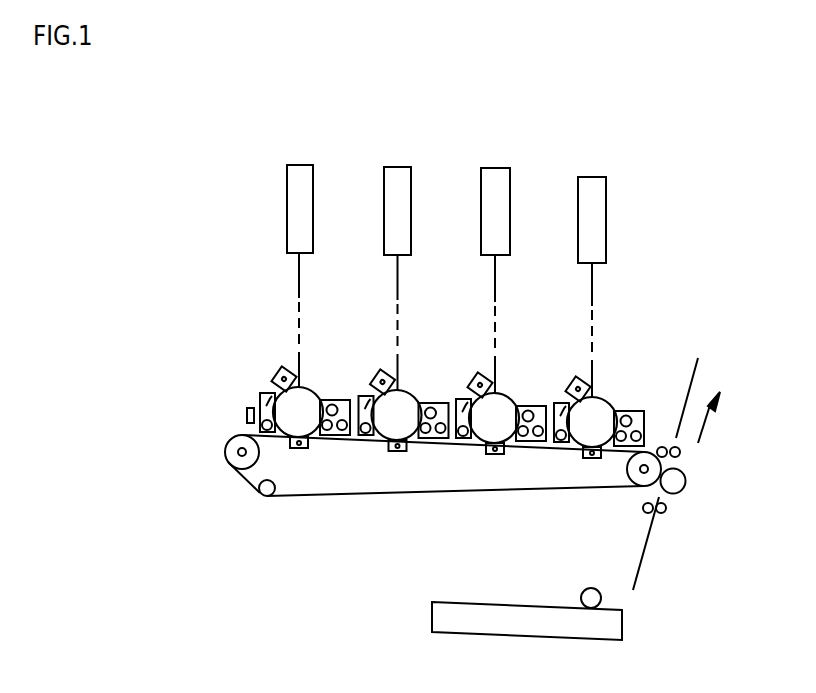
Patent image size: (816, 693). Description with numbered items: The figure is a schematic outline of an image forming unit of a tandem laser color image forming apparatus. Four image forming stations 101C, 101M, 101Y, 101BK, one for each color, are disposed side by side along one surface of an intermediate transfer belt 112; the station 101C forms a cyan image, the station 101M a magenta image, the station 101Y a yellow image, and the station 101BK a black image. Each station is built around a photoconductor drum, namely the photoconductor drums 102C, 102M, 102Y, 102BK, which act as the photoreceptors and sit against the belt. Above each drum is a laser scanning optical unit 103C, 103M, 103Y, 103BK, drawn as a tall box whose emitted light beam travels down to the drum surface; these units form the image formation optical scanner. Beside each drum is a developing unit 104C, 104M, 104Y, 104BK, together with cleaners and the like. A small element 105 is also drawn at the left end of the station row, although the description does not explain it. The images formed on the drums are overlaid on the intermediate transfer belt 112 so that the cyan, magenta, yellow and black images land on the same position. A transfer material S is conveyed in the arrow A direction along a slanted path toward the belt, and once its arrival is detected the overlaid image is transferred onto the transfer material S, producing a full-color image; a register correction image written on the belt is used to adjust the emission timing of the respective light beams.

The image forming station 101BK is at (312, 448).
The image forming station 101Y is at (385, 450).
The image forming station 101M is at (477, 454).
The image forming station 101C is at (574, 459).
The photoconductor drum 102BK is at (308, 386).
The photoconductor drum 102Y is at (406, 389).
The photoconductor drum 102M is at (504, 392).
The photoconductor drum 102C is at (603, 396).
The laser scanning optical unit 103BK is at (313, 182).
The laser scanning optical unit 103Y is at (411, 182).
The laser scanning optical unit 103M is at (510, 184).
The laser scanning optical unit 103C is at (606, 190).
The developing unit 104BK is at (327, 402).
The developing unit 104Y is at (426, 405).
The developing unit 104M is at (523, 408).
The developing unit 104C is at (606, 410).
The sensor 105 is at (250, 407).
The intermediate transfer belt 112 is at (517, 493).
The transfer material S is at (640, 557).
The arrow direction A is at (710, 417).